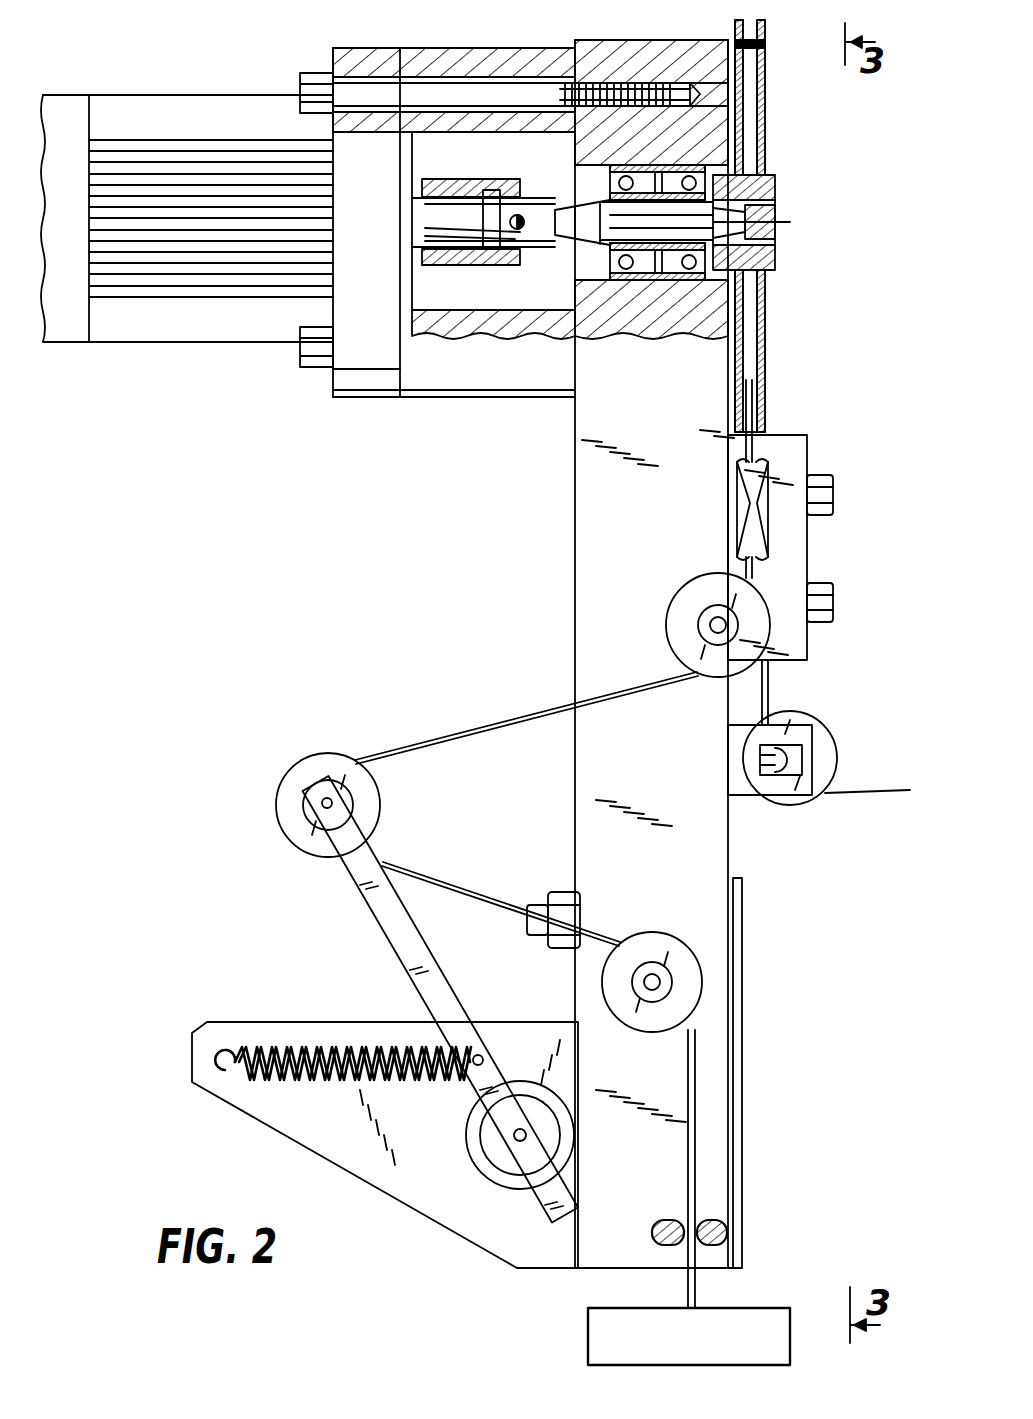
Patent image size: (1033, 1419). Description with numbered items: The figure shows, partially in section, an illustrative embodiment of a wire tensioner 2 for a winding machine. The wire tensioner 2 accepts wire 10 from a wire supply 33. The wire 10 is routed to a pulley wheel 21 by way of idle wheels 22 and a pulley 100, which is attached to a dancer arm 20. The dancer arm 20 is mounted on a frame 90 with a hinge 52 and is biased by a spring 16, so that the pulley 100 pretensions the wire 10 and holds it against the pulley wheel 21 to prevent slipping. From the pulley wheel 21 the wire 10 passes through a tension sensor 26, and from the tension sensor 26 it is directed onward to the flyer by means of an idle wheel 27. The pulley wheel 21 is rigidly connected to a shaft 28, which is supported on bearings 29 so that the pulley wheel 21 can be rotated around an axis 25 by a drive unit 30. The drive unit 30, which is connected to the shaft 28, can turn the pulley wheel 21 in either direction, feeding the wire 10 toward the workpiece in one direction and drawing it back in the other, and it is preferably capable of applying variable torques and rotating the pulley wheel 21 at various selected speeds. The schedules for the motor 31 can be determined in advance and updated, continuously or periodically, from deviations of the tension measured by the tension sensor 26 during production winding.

The wire tensioner 2 is at (432, 623).
The wire 10 is at (697, 1296).
The spring 16 is at (400, 1082).
The dancer arm 20 is at (395, 932).
The pulley wheel 21 is at (746, 46).
The idle wheels 22 is at (736, 472).
The axis 25 is at (785, 224).
The tension sensor 26 is at (797, 537).
The idle wheel 27 is at (820, 734).
The shaft 28 is at (577, 205).
The bearings 29 is at (580, 298).
The drive unit 30 is at (250, 86).
The motor 31 is at (152, 110).
The wire supply 33 is at (592, 1323).
The hinge 52 is at (519, 1140).
The frame 90 is at (717, 1018).
The pulley 100 is at (297, 770).